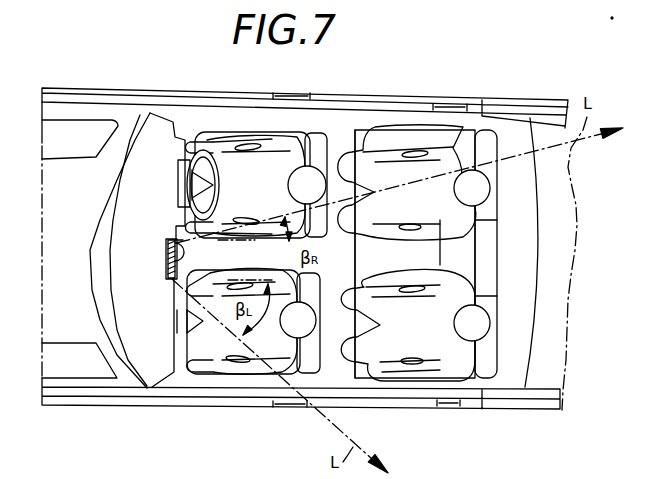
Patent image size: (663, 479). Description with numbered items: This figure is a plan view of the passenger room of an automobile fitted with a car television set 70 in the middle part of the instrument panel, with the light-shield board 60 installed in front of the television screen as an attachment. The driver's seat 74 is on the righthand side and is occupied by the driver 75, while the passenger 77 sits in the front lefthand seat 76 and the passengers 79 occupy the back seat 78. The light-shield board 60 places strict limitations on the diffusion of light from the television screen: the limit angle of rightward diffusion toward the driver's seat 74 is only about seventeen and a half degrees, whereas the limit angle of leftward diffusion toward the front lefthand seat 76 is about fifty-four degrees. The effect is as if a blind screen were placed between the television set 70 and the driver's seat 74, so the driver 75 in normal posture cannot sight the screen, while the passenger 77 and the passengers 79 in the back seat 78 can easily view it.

The light-shield board 60 is at (170, 240).
The car television set 70 is at (167, 262).
The driver's seat 74 is at (318, 147).
The driver 75 is at (272, 152).
The front lefthand seat 76 is at (290, 367).
The passenger 77 is at (222, 347).
The back seat 78 is at (430, 258).
The passengers 79 is at (435, 343).